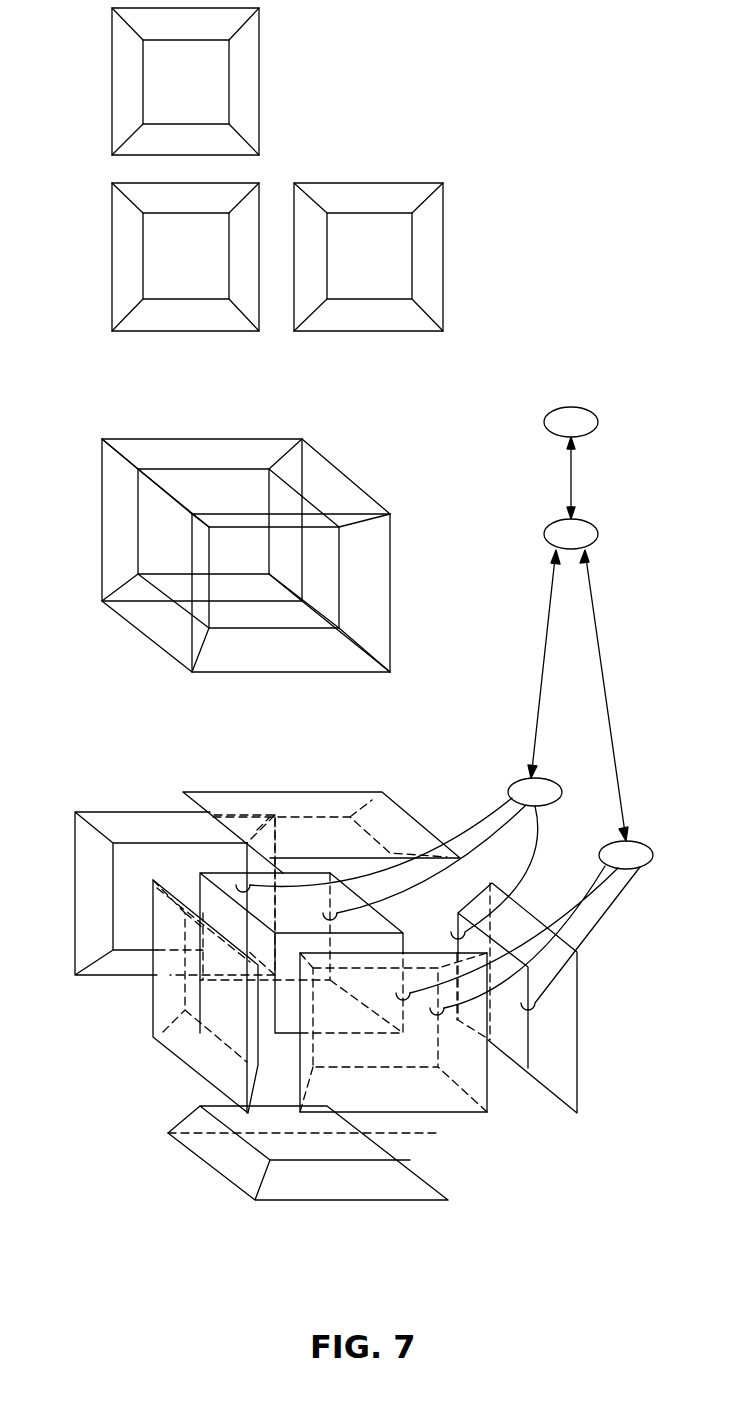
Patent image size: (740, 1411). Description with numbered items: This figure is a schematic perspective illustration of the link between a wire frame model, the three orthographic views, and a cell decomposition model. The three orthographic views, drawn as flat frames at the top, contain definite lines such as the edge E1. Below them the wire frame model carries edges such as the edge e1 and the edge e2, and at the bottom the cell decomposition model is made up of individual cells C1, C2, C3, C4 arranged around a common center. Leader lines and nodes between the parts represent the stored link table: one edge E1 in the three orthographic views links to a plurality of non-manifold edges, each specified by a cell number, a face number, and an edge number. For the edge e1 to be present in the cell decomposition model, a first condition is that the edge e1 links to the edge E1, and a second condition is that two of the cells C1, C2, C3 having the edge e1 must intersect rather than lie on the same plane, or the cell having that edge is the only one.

The edge in the three orthographic views E1 is at (546, 418).
The edge of the wire frame model e1 is at (544, 535).
The edge of the wire frame model e2 is at (544, 527).
The cell C1 is at (443, 1104).
The cell C2 is at (568, 1035).
The cell C3 is at (387, 923).
The cell C4 is at (113, 975).